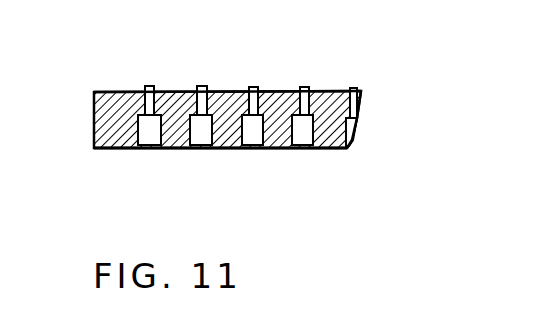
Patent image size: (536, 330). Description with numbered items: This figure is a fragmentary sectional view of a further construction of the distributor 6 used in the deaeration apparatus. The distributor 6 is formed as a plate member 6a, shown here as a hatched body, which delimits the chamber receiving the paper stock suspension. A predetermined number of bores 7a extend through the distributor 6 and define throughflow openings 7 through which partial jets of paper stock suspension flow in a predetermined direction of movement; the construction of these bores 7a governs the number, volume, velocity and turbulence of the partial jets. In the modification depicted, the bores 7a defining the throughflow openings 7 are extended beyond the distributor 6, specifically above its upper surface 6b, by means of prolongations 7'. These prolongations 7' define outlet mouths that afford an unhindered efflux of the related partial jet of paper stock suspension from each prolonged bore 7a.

The distributor 6 is at (191, 112).
The plate member 6a is at (278, 149).
The upper surface 6b is at (122, 91).
The throughflow openings 7 is at (220, 112).
The prolongations 7' is at (218, 60).
The bores 7a is at (128, 147).